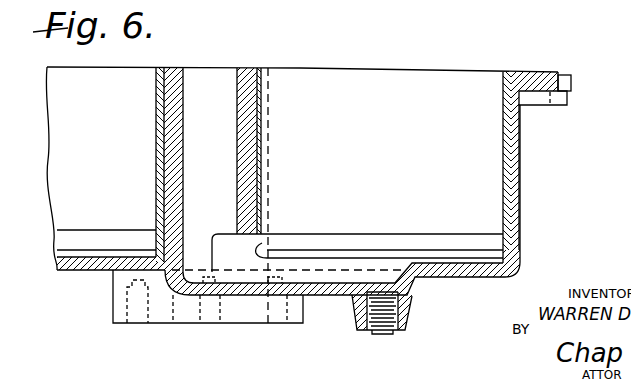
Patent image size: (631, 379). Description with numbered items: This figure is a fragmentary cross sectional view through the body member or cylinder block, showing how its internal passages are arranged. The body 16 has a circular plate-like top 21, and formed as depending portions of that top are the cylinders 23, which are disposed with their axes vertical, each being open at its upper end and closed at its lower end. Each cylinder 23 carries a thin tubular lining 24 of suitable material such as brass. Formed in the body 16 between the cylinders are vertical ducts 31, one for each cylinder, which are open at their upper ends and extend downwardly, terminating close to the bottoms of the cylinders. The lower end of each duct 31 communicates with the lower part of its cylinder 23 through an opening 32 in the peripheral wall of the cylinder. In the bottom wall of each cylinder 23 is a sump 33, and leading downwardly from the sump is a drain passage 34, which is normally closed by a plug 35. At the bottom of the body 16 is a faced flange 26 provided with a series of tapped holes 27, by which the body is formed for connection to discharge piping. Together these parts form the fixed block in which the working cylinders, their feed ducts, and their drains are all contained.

The body 16 is at (62, 272).
The circular plate-like top 21 is at (571, 83).
The cylinder 23 is at (251, 182).
The tubular lining 24 is at (162, 137).
The faced flange 26 is at (185, 312).
The tapped hole 27 is at (138, 312).
The vertical duct 31 is at (214, 127).
The opening 32 is at (262, 243).
The sump 33 is at (325, 278).
The drain passage 34 is at (412, 297).
The plug 35 is at (373, 318).